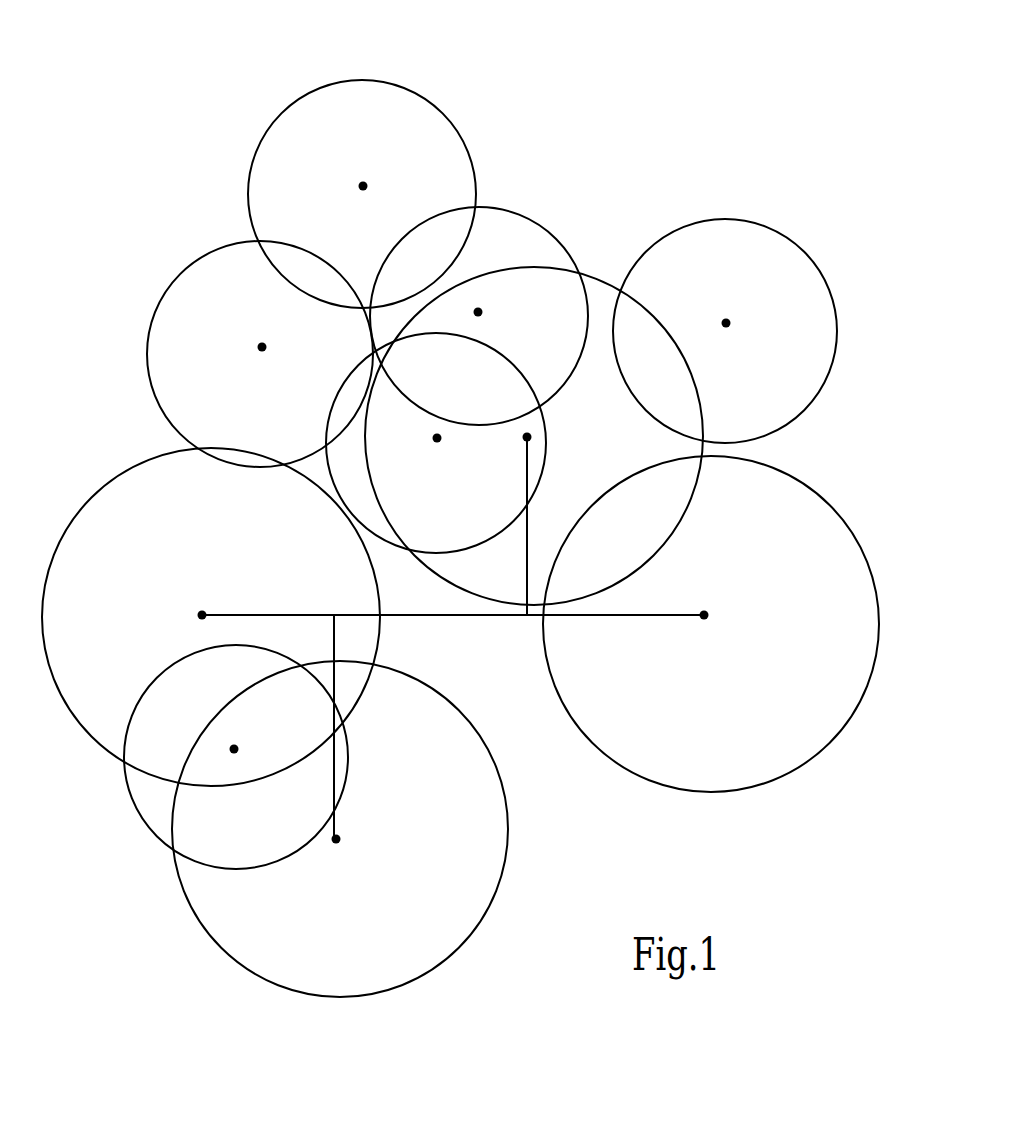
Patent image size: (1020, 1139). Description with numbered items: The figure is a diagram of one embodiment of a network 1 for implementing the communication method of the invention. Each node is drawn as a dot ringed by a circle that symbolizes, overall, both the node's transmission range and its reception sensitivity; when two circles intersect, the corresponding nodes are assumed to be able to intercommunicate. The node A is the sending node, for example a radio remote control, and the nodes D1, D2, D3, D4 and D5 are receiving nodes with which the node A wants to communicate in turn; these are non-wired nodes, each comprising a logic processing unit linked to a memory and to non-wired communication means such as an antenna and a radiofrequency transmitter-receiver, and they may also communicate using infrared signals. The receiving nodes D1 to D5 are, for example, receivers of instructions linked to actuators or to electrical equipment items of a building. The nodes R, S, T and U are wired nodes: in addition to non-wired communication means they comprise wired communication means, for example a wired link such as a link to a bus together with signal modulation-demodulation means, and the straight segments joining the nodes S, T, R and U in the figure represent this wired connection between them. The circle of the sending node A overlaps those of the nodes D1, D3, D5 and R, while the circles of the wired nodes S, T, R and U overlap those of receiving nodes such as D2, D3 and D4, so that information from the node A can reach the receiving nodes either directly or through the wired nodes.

The network 1 is at (621, 90).
The receiving node D1 is at (362, 194).
The receiving node D2 is at (725, 331).
The receiving node D3 is at (436, 443).
The receiving node D4 is at (236, 757).
The receiving node D5 is at (260, 354).
The sending node A is at (479, 316).
The wired node R is at (534, 441).
The wired node S is at (373, 617).
The wired node T is at (711, 624).
The wired node U is at (340, 806).